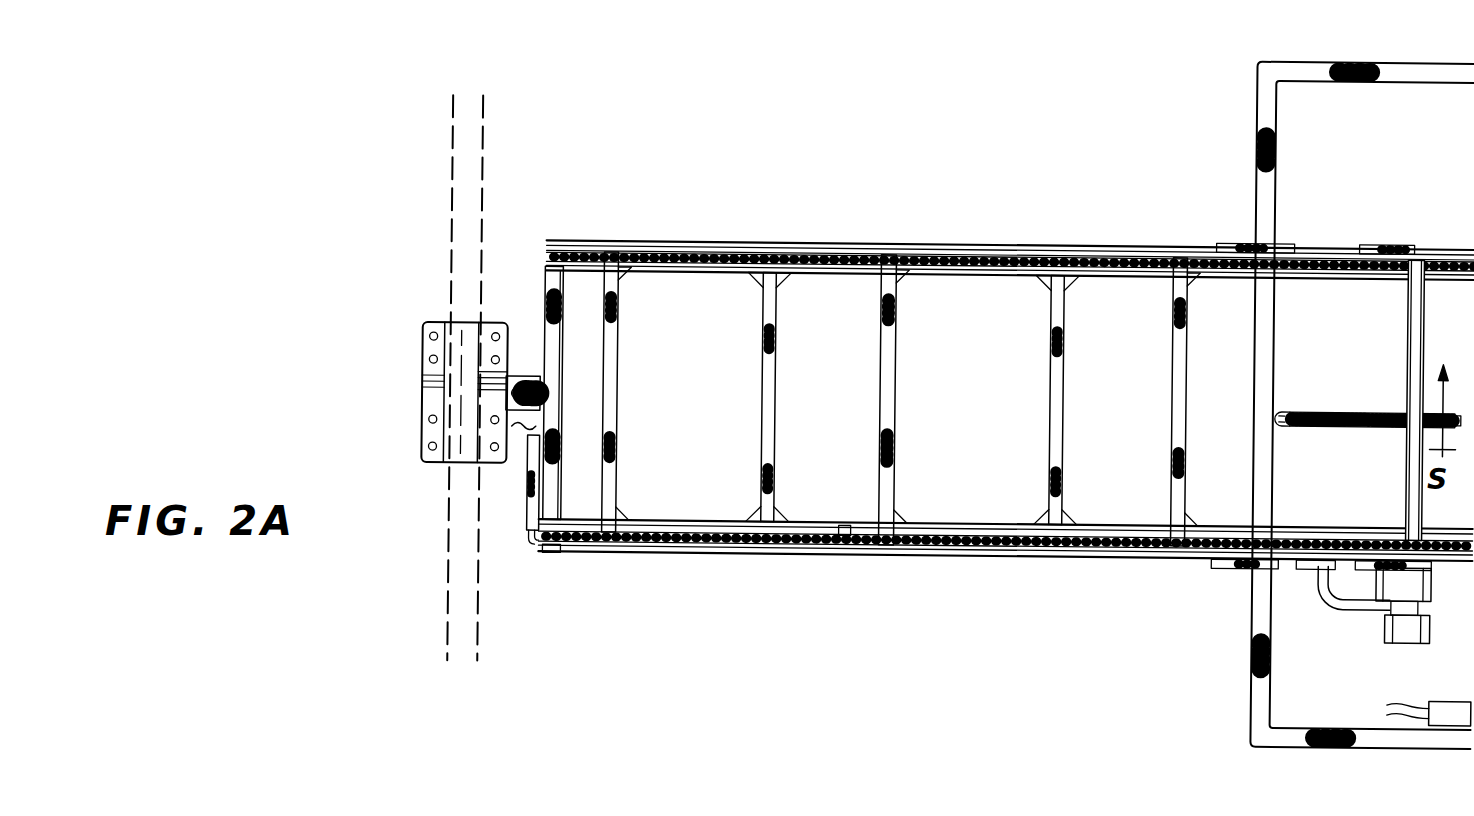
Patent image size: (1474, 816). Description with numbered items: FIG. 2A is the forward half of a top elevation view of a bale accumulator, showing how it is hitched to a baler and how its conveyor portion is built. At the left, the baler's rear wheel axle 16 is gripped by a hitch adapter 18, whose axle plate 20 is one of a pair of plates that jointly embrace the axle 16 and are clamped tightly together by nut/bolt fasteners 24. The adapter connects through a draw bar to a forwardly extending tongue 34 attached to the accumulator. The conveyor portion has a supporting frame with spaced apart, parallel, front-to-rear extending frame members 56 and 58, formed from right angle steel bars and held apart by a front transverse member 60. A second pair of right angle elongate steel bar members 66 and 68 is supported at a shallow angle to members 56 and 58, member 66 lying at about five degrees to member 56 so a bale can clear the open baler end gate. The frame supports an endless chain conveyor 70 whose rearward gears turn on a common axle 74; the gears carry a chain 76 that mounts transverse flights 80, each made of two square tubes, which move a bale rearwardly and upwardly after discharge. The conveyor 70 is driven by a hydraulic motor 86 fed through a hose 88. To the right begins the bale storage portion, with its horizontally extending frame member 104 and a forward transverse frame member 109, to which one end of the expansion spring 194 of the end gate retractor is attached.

The axle 16 is at (452, 172).
The hitch adapter 18 is at (401, 321).
The axle plate 20 is at (430, 383).
The nut/bolt fasteners 24 is at (505, 326).
The tongue 34 is at (543, 386).
The frame member 56 is at (862, 555).
The frame member 58 is at (917, 258).
The front transverse member 60 is at (543, 278).
The right angle elongate steel bar member 66 is at (842, 525).
The right angle elongate steel bar member 68 is at (985, 264).
The endless chain conveyor 70 is at (798, 238).
The common axle 74 is at (1408, 326).
The chain 76 is at (1113, 262).
The flights 80 is at (760, 447).
The hydraulic motor 86 is at (1405, 641).
The hose 88 is at (533, 548).
The frame member 104 is at (1384, 56).
The forward transverse frame member 109 is at (1256, 170).
The expansion spring 194 is at (1322, 428).